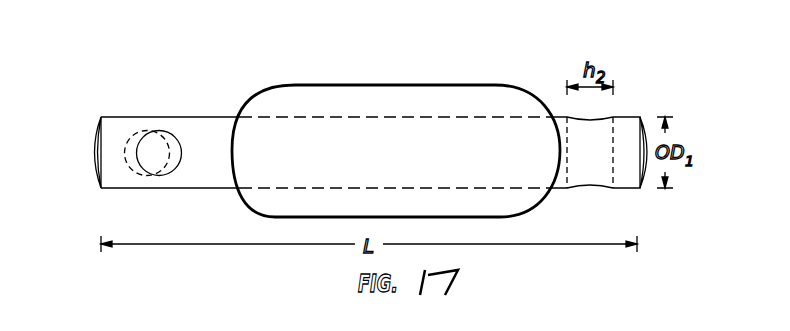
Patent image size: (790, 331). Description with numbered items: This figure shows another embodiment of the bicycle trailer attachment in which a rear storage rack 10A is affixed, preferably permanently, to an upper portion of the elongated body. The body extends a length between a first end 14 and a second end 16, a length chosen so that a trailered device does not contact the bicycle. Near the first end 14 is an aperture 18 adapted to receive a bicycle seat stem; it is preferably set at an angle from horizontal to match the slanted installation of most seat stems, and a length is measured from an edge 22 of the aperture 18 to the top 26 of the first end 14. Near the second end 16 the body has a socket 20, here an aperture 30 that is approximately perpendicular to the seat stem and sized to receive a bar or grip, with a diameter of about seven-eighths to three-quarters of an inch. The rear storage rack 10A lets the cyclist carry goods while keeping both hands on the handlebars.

The rear storage rack 10A is at (466, 80).
The first end 14 is at (97, 155).
The second end 16 is at (642, 117).
The aperture 18 is at (176, 168).
The socket 20 is at (594, 191).
The edge 22 is at (165, 131).
The top 26 is at (101, 116).
The aperture 30 is at (577, 188).